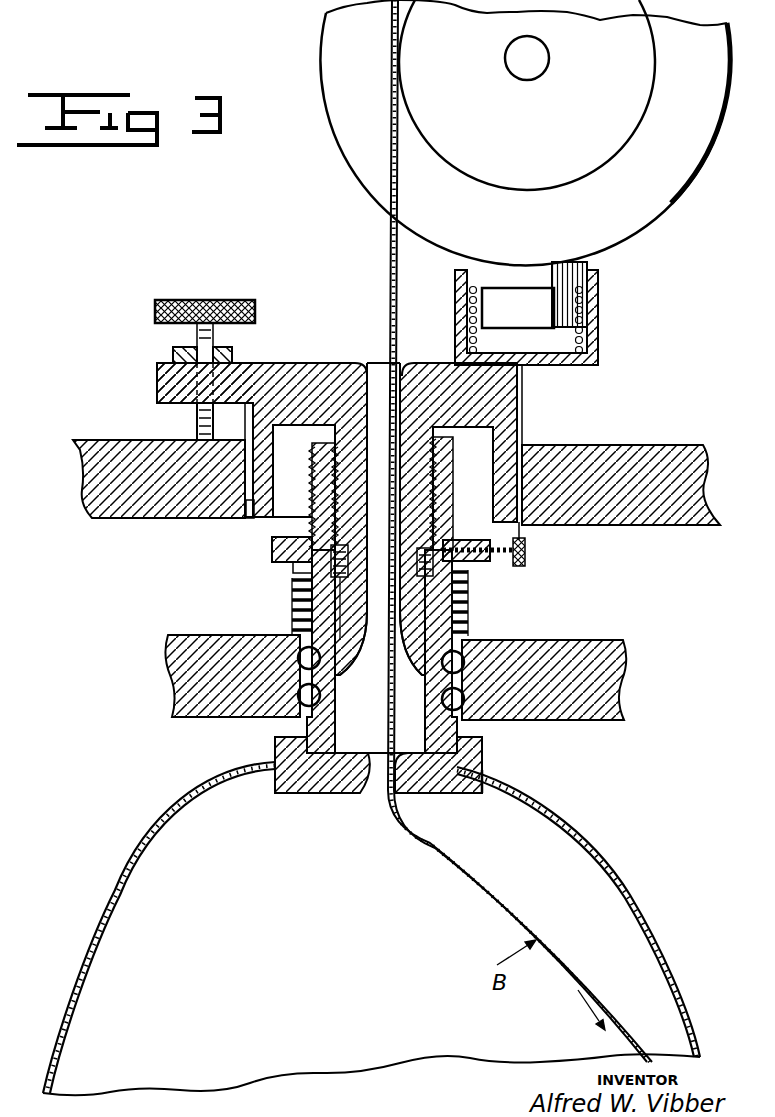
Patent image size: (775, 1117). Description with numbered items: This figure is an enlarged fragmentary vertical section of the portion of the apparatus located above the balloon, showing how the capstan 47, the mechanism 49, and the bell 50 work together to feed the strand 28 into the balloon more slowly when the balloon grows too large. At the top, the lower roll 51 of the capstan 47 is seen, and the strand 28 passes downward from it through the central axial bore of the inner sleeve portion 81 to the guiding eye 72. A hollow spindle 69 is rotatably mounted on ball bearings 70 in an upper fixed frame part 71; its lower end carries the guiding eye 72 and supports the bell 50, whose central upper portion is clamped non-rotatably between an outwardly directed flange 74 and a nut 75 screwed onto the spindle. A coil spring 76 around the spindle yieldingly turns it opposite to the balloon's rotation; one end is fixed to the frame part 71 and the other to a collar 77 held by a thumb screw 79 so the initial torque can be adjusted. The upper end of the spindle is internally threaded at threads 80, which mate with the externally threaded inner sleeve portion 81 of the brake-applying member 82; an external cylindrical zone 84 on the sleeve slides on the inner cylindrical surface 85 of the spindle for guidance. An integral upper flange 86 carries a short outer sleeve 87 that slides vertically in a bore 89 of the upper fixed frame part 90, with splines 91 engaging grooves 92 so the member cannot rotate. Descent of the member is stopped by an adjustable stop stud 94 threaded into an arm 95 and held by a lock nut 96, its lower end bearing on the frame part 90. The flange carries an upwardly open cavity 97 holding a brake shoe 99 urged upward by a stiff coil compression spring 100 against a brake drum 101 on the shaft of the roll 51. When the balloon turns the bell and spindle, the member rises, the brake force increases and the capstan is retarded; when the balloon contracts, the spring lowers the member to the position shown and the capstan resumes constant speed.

The strand 28 is at (378, 322).
The capstan 47 is at (328, 160).
The mechanism 49 is at (156, 597).
The bell 50 is at (625, 890).
The roll 51 is at (513, 172).
The spindle 69 is at (290, 607).
The ball bearings 70 is at (462, 655).
The frame part 71 is at (203, 648).
The guiding eye 72 is at (355, 797).
The flange 74 is at (485, 755).
The nut 75 is at (470, 800).
The coil spring 76 is at (468, 620).
The collar 77 is at (305, 573).
The thumb screw 79 is at (492, 562).
The threads 80 is at (330, 485).
The inner sleeve portion 81 is at (357, 485).
The brake-applying member 82 is at (337, 362).
The external cylindrical zone 84 is at (348, 667).
The inner cylindrical surface 85 is at (428, 705).
The flange 86 is at (447, 365).
The outer sleeve 87 is at (503, 447).
The bore 89 is at (282, 536).
The frame part 90 is at (135, 518).
The splines 91 is at (252, 432).
The grooves 92 is at (250, 522).
The stop stud 94 is at (195, 428).
The arm 95 is at (157, 393).
The lock nut 96 is at (240, 357).
The cavity 97 is at (600, 330).
The brake shoe 99 is at (592, 268).
The coil compression spring 100 is at (592, 300).
The brake drum 101 is at (656, 218).